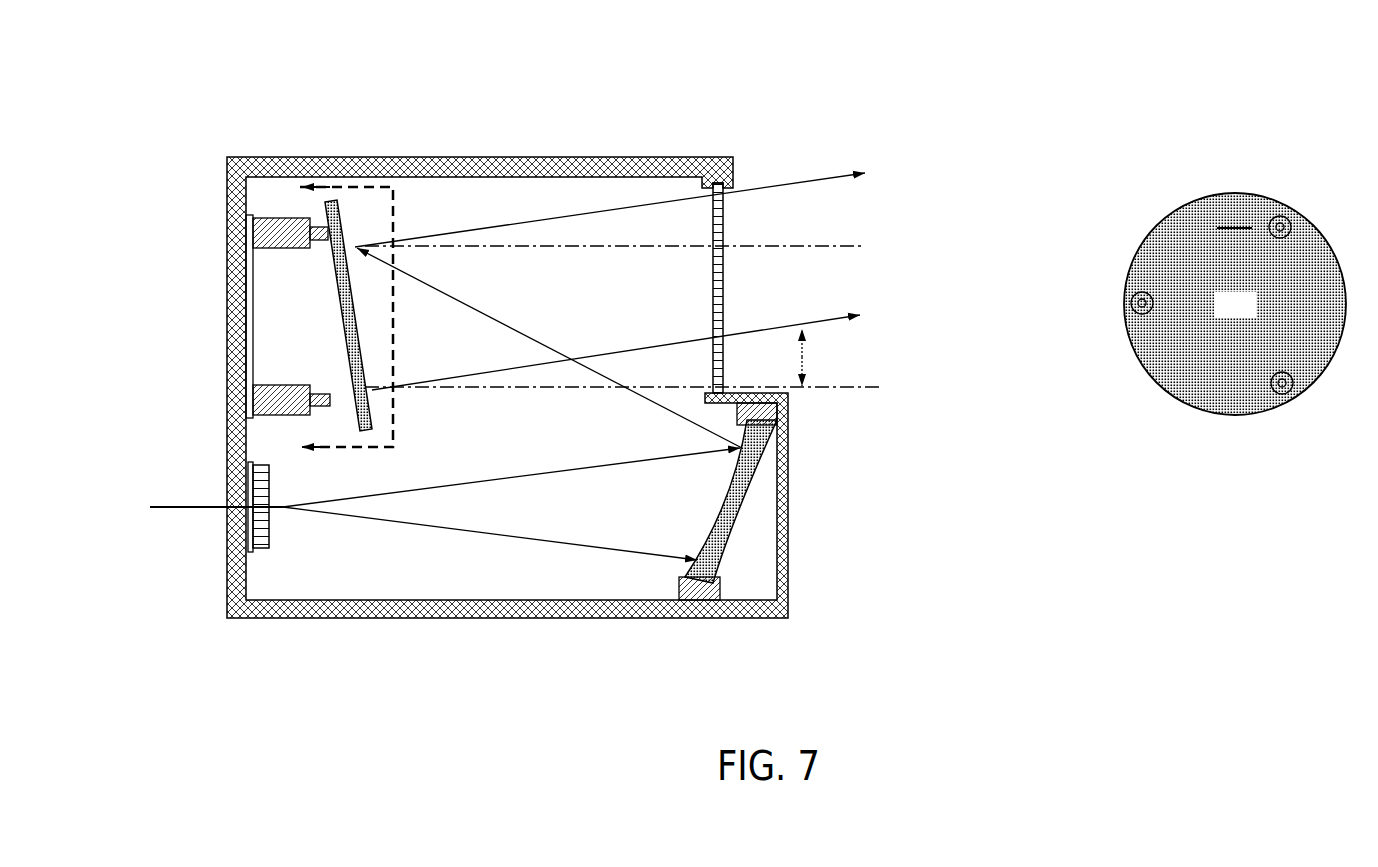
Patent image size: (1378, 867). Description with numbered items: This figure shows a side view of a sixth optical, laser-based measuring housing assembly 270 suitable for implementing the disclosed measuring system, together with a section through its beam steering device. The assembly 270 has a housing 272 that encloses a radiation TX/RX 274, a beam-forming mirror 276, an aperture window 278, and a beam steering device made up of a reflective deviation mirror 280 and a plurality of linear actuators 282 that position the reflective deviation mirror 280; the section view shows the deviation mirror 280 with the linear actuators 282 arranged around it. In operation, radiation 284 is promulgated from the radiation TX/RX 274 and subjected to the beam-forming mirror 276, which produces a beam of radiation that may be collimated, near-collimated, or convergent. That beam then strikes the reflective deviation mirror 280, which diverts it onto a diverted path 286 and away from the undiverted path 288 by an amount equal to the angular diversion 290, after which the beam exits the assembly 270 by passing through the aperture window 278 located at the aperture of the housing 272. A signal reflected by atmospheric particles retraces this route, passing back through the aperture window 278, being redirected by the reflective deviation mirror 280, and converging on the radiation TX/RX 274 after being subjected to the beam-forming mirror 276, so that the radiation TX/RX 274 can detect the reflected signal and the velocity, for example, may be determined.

The housing assembly 270 is at (313, 73).
The housing 272 is at (418, 157).
The radiation TX/RX 274 is at (283, 551).
The beam-forming mirror 276 is at (753, 500).
The aperture window 278 is at (727, 221).
The reflective deviation mirror 280 is at (1252, 315).
The linear actuators 282 is at (277, 218).
The radiation 284 is at (373, 393).
The diverted path 286 is at (790, 178).
The undiverted path 288 is at (455, 387).
The angular diversion 290 is at (873, 357).